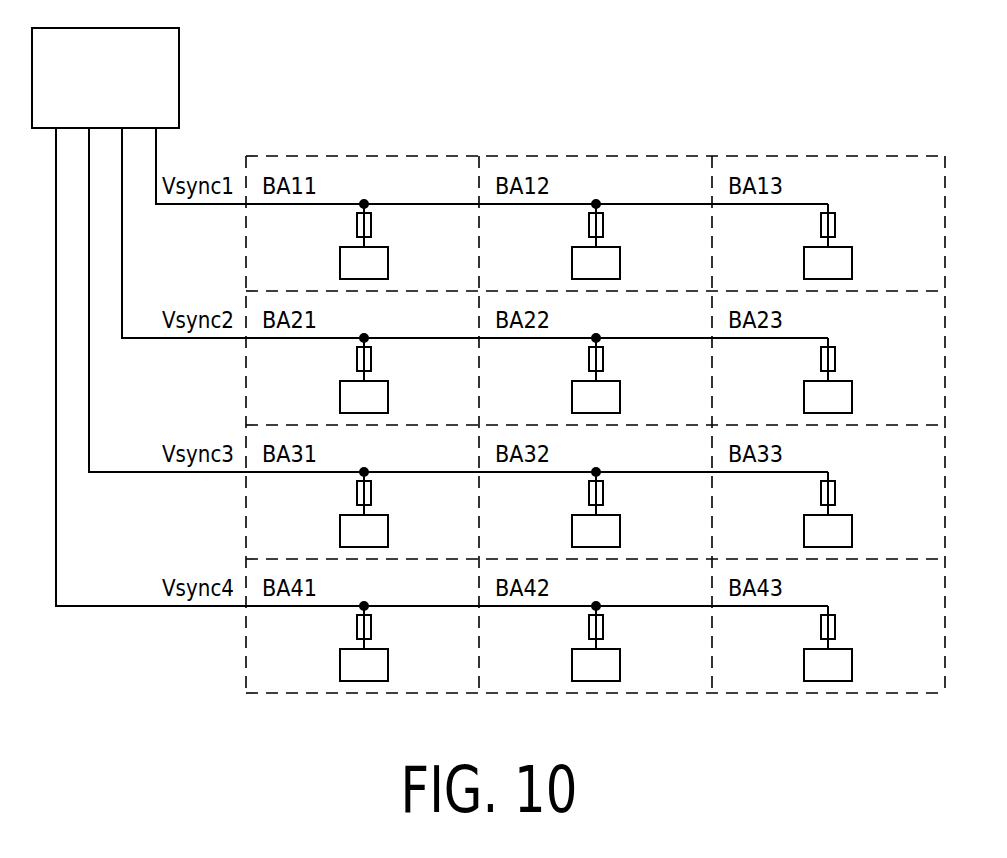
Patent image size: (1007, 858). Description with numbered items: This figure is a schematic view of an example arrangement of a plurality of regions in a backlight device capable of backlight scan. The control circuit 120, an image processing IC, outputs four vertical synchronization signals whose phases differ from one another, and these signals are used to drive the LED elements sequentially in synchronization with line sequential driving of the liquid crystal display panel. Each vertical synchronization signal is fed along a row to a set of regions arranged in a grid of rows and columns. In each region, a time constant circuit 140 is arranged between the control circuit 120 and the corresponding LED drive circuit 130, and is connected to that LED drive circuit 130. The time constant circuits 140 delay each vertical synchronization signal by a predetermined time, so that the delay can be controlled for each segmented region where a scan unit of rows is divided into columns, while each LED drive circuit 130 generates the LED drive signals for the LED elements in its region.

The control circuit 120 is at (82, 94).
The LED drive circuit 130 is at (350, 247).
The time constant circuit 140 is at (372, 223).